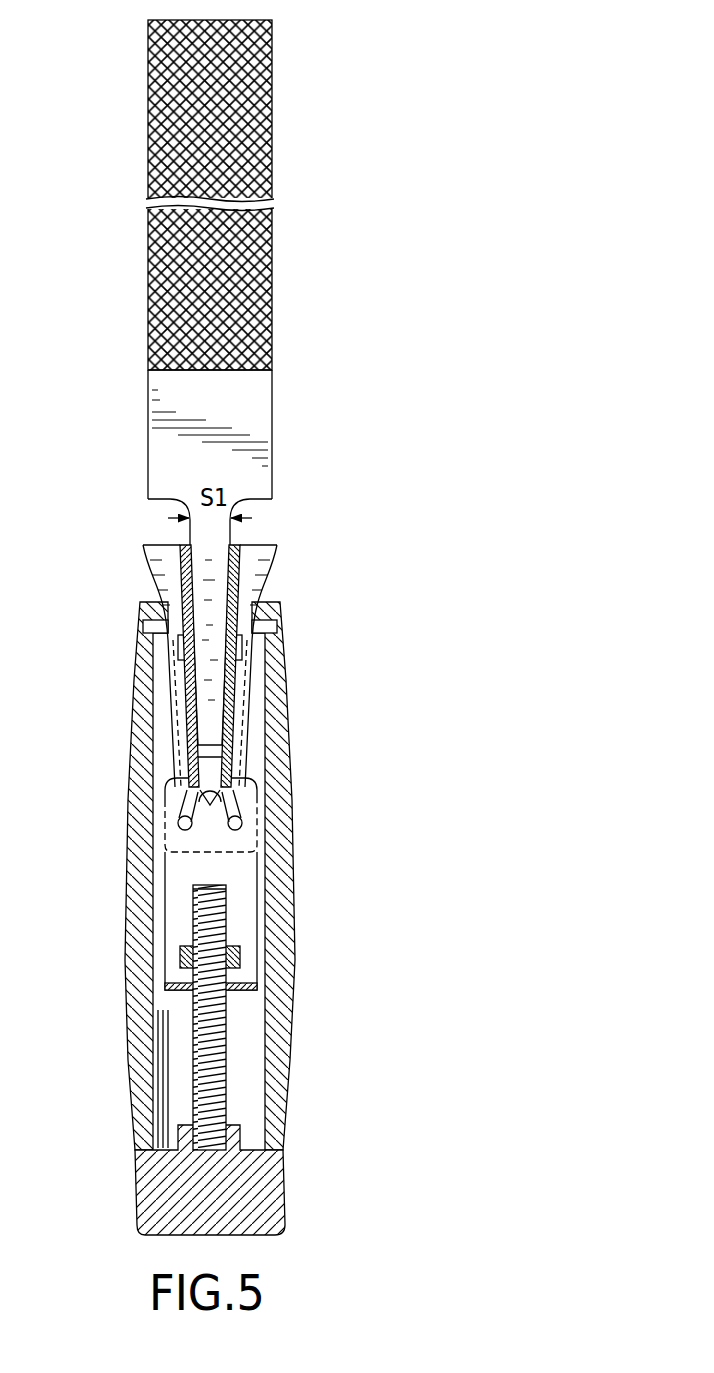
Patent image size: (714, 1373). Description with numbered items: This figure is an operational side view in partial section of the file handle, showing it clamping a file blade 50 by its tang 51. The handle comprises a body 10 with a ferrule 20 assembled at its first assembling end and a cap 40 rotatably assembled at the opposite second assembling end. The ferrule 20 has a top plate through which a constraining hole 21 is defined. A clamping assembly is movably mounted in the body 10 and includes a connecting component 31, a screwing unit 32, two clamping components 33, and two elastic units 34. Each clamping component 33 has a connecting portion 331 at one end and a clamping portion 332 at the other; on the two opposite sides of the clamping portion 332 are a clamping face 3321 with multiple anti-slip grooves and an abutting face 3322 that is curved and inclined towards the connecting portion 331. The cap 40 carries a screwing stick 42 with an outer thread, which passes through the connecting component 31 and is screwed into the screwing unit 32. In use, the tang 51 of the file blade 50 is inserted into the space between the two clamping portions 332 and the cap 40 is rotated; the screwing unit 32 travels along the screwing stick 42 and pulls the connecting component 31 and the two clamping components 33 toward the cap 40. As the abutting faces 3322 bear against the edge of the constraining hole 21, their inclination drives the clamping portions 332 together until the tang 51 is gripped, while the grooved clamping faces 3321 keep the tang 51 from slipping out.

The body 10 is at (313, 1004).
The ferrule 20 is at (301, 686).
The constraining hole 21 is at (248, 628).
The connecting component 31 is at (173, 1000).
The screwing unit 32 is at (236, 957).
The clamping components 33 is at (210, 743).
The elastic units 34 is at (306, 861).
The cap 40 is at (126, 1184).
The screwing stick 42 is at (206, 1052).
The file blade 50 is at (304, 224).
The tang 51 is at (213, 668).
The connecting portion 331 is at (236, 818).
The clamping portion 332 is at (219, 638).
The clamping face 3321 is at (162, 556).
The abutting face 3322 is at (168, 576).